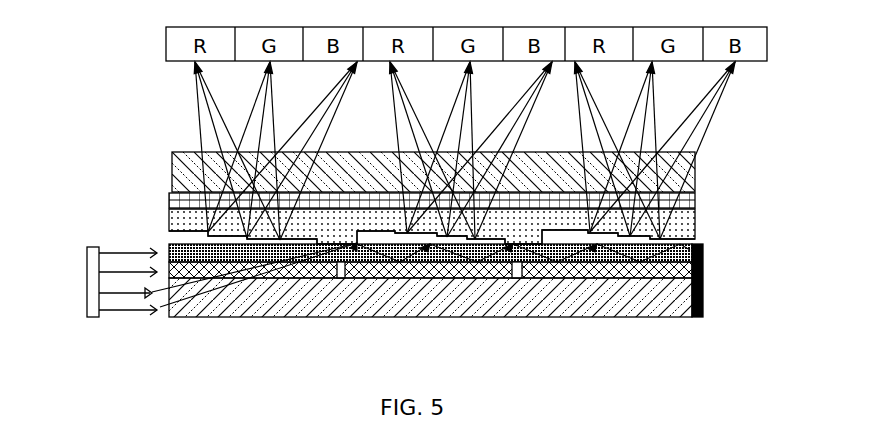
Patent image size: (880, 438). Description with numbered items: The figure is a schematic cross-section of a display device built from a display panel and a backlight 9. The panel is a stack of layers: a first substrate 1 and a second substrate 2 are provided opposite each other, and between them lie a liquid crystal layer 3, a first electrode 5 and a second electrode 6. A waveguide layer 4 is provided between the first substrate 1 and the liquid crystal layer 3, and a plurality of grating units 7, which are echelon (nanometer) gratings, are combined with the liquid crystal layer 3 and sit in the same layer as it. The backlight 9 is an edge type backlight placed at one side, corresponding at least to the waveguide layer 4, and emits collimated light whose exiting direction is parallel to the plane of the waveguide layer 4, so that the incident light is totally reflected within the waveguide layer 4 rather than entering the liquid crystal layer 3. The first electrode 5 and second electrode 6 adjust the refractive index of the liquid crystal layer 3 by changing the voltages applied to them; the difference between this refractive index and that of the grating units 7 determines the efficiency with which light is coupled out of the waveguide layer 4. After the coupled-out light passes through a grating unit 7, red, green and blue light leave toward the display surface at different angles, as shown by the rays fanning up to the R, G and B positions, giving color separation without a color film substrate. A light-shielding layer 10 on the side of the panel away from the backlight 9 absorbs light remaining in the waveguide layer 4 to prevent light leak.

The first substrate 1 is at (660, 297).
The second substrate 2 is at (688, 166).
The liquid crystal layer 3 is at (660, 222).
The waveguide layer 4 is at (704, 250).
The first electrode 5 is at (672, 268).
The second electrode 6 is at (655, 205).
The grating unit 7 is at (697, 229).
The backlight 9 is at (88, 276).
The light-shielding layer 10 is at (704, 288).